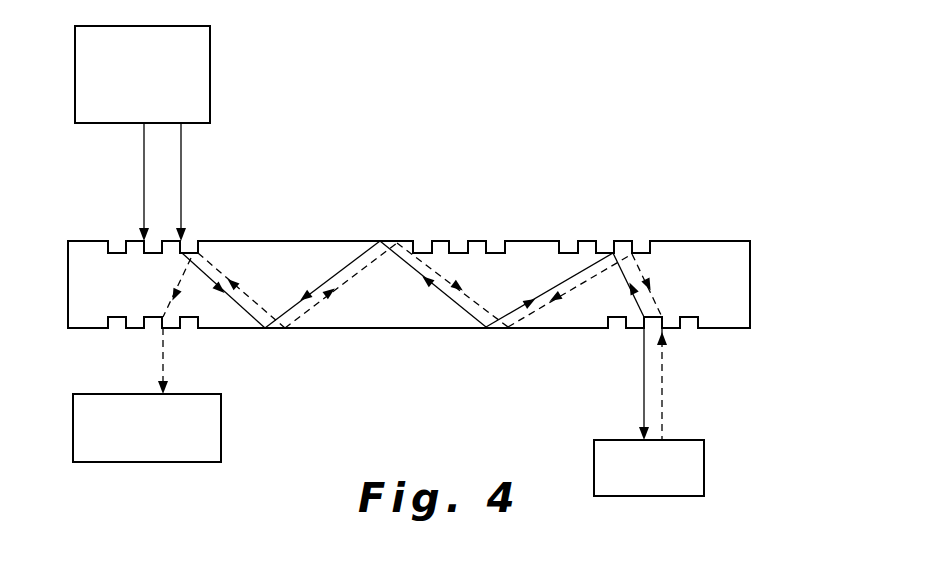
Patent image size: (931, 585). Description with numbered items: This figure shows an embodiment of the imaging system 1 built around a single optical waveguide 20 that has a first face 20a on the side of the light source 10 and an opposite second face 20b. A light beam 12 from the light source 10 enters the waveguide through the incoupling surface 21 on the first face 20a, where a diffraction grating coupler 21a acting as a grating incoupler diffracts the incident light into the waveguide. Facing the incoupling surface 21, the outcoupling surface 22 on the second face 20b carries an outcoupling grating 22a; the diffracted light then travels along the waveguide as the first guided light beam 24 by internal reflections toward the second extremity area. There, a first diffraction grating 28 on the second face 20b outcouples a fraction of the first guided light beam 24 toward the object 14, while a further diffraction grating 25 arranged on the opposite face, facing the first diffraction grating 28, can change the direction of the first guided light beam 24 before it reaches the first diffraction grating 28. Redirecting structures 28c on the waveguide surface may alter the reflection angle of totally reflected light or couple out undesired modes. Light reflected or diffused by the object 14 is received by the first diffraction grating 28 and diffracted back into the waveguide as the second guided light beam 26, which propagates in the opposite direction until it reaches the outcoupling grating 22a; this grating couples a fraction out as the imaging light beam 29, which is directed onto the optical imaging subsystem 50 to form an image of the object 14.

The imaging system 1 is at (440, 180).
The light source 10 is at (185, 90).
The light beam 12 is at (144, 146).
The object 14 is at (687, 465).
The optical waveguide 20 is at (578, 328).
The first face 20a is at (715, 241).
The second face 20b is at (428, 328).
The incoupling surface 21 is at (120, 199).
The diffraction grating coupler 21a is at (127, 240).
The outcoupling surface 22 is at (98, 336).
The diffraction grating coupler 22a is at (128, 328).
The first guided light beam 24 is at (332, 278).
The further diffraction grating 25 is at (623, 243).
The second guided light beam 26 is at (319, 298).
The first diffraction grating 28 is at (680, 328).
The redirecting structure 28c is at (480, 240).
The imaging light beam 29 is at (165, 347).
The optical imaging subsystem 50 is at (193, 435).